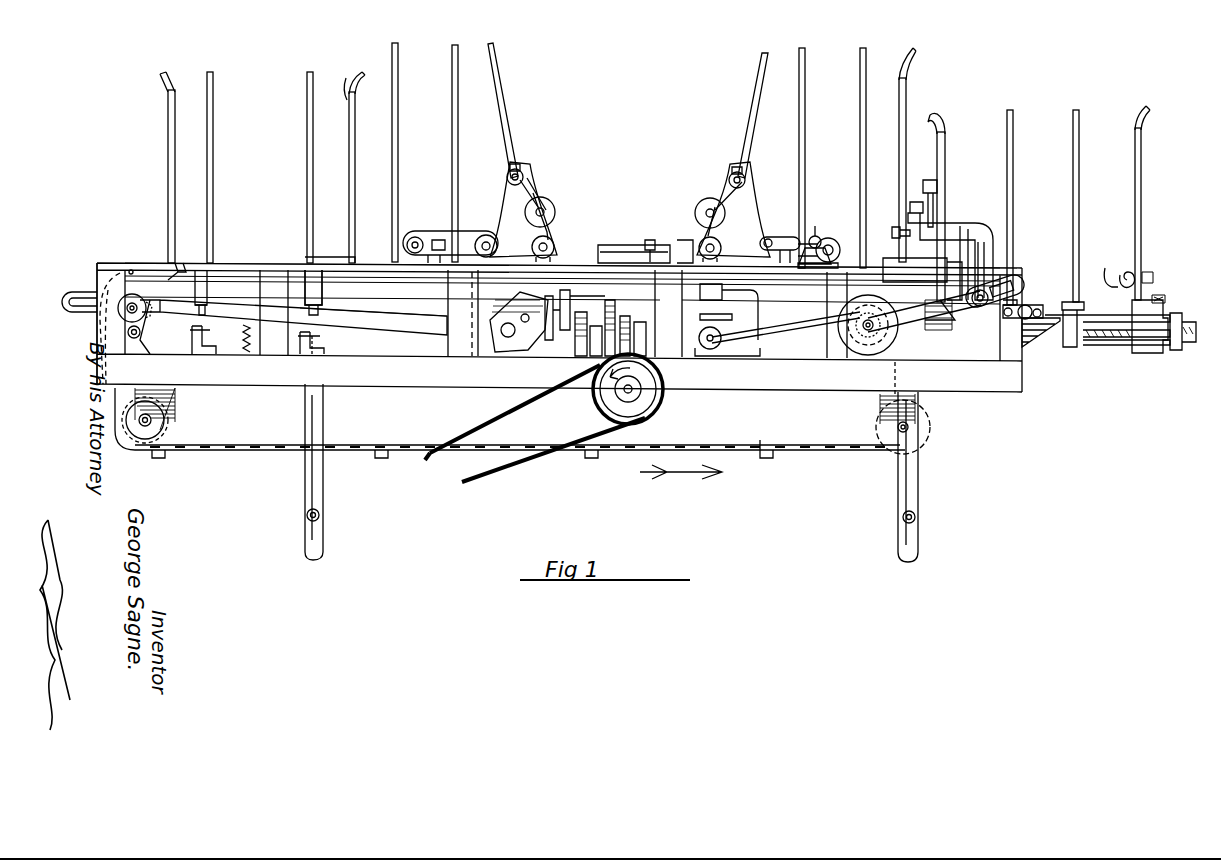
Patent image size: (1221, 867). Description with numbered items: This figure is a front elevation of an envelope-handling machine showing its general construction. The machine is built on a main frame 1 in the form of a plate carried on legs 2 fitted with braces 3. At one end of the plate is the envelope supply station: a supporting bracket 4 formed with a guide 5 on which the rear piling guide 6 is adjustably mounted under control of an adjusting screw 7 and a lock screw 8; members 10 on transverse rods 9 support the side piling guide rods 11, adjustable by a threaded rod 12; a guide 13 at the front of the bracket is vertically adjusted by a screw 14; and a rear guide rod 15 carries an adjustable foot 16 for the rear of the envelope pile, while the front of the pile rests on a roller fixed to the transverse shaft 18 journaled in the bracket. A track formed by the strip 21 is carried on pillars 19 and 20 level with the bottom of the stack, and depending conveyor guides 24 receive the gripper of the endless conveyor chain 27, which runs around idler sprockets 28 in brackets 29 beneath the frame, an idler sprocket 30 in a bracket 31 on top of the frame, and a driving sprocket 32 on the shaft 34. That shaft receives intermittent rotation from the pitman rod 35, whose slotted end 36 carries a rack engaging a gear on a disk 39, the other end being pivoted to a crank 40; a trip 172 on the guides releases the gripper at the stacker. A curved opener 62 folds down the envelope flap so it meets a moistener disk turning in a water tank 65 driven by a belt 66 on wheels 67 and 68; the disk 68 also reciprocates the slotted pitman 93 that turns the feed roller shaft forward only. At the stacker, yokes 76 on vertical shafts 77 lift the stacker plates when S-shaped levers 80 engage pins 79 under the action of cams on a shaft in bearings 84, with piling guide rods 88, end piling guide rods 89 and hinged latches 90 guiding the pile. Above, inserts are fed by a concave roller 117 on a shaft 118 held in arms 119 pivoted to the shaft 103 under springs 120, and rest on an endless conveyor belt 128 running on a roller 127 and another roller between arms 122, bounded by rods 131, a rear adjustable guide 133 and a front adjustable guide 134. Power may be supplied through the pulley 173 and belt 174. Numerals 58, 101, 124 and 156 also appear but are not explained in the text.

The main frame 1 is at (387, 377).
The legs 2 is at (304, 522).
The braces 3 is at (319, 513).
The supporting bracket 4 is at (965, 232).
The guide 5 is at (1104, 325).
The rear piling guide 6 is at (1147, 352).
The adjusting screw 7 is at (1116, 338).
The lock screw 8 is at (1158, 296).
The transverse rods 9 is at (1052, 327).
The members 10 is at (1050, 317).
The side piling guide rods 11 is at (1072, 160).
The threaded rod 12 is at (1030, 307).
The guide 13 is at (946, 146).
The screw 14 is at (922, 207).
The rear guide rod 15 is at (1132, 143).
The adjustable foot 16 is at (1107, 275).
The transverse shaft 18 is at (998, 288).
The pillars 19 is at (97, 272).
The pillars 20 is at (868, 316).
The strip 21 is at (108, 263).
The conveyor guides 24 is at (276, 305).
The conveyor chain 27 is at (241, 450).
The idler sprockets 28 is at (166, 419).
The brackets 29 is at (178, 390).
The idler sprocket 30 is at (893, 370).
The bracket 31 is at (938, 322).
The driving sprocket 32 is at (152, 320).
The shaft 34 is at (128, 332).
The pitman rod 35 is at (377, 322).
The slotted end 36 is at (127, 309).
The disk 39 is at (131, 268).
The crank 40 is at (490, 352).
The shaft 58 is at (866, 327).
The curved member or opener 62 is at (816, 236).
The tank of water 65 is at (729, 312).
The belt 66 is at (774, 328).
The wheel 67 is at (713, 350).
The wheel (disk) 68 is at (872, 338).
The yokes 76 is at (316, 292).
The vertical shafts 77 is at (321, 358).
The pins 79 is at (287, 358).
The S shaped levers 80 is at (214, 355).
The bearings 84 is at (331, 257).
The piling guide rods 88 is at (307, 108).
The end piling guide rods 89 is at (168, 145).
The latches 90 is at (259, 263).
The slotted pitman 93 is at (924, 311).
The bracket 101 is at (630, 209).
The shaft 103 is at (523, 170).
The concave roller 117 is at (553, 208).
The shaft 118 is at (556, 212).
The arms 119 is at (531, 183).
The springs 120 is at (541, 204).
The arms 122 is at (466, 243).
The bar 124 is at (416, 297).
The roller 127 is at (833, 238).
The endless conveyor belt 128 is at (428, 231).
The rods 131 is at (452, 83).
The rear adjustable guide 133 is at (353, 53).
The front adjustable guide 134 is at (497, 58).
The plate 156 is at (636, 242).
The trip 172 is at (181, 263).
The pulley 173 is at (602, 397).
The belt 174 is at (466, 480).